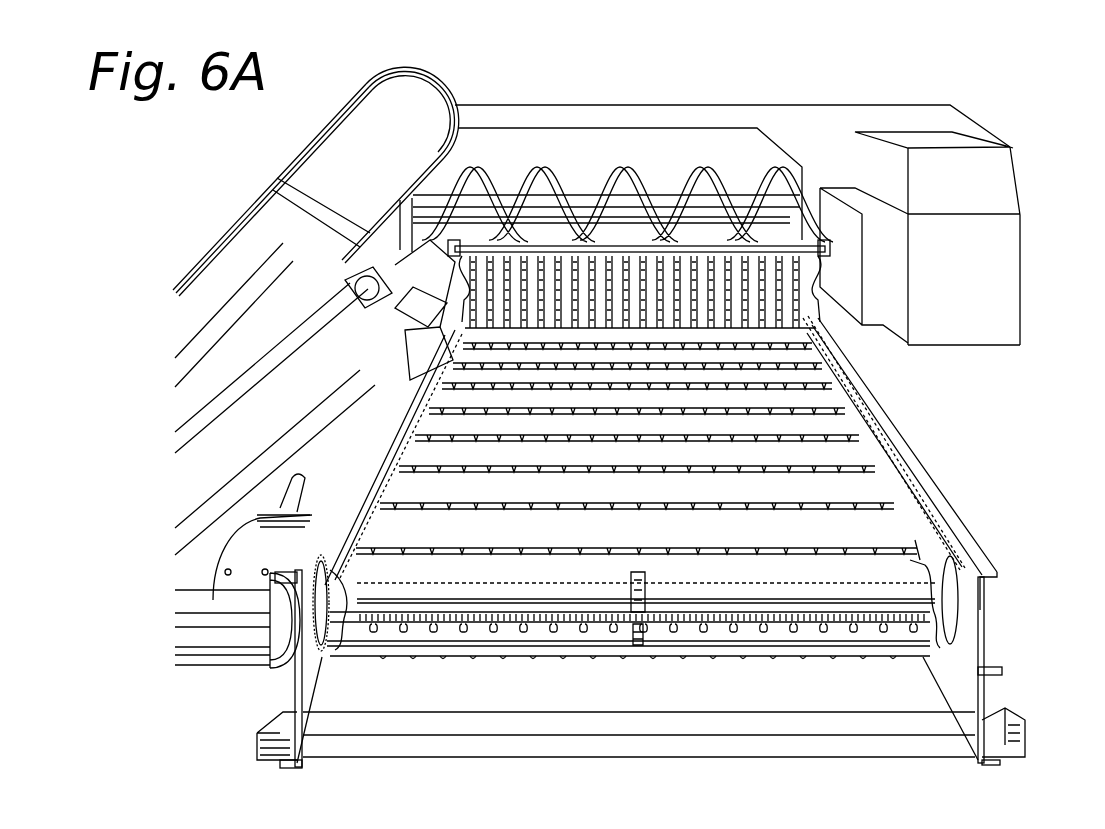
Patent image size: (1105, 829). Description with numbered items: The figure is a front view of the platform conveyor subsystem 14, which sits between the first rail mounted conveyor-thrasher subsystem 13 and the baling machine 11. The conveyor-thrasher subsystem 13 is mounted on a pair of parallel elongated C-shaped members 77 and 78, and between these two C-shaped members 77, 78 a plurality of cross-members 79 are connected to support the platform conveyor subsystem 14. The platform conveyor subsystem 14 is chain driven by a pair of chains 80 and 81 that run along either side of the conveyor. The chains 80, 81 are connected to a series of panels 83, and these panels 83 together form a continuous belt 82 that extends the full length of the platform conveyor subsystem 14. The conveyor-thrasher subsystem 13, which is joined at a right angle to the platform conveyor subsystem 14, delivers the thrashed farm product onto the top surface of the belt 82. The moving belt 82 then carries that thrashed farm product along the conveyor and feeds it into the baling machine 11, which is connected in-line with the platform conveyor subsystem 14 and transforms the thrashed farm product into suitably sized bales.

The baling machine 11 is at (793, 147).
The first rail mounted conveyor-thrasher subsystem 13 is at (440, 75).
The platform conveyor subsystem 14 is at (675, 556).
The elongated C-shaped member 77 is at (292, 770).
The elongated C-shaped member 78 is at (985, 697).
The cross-members 79 is at (762, 757).
The chain 80 is at (922, 542).
The chain 81 is at (322, 660).
The continuous belt 82 is at (599, 560).
The panels 83 is at (620, 540).